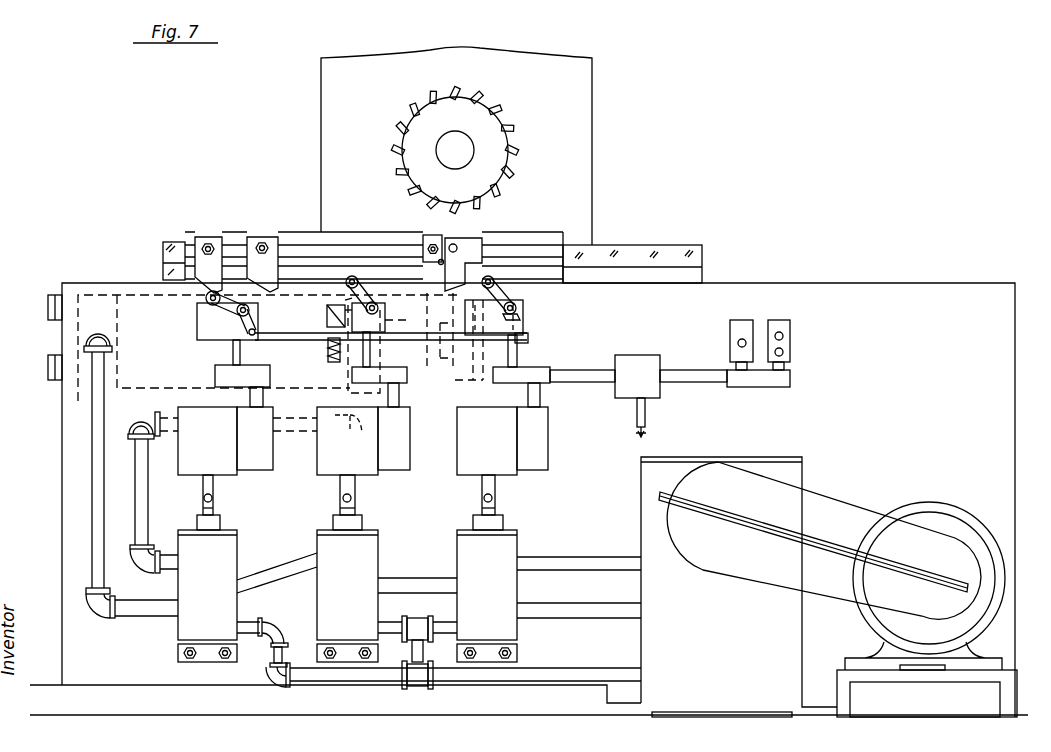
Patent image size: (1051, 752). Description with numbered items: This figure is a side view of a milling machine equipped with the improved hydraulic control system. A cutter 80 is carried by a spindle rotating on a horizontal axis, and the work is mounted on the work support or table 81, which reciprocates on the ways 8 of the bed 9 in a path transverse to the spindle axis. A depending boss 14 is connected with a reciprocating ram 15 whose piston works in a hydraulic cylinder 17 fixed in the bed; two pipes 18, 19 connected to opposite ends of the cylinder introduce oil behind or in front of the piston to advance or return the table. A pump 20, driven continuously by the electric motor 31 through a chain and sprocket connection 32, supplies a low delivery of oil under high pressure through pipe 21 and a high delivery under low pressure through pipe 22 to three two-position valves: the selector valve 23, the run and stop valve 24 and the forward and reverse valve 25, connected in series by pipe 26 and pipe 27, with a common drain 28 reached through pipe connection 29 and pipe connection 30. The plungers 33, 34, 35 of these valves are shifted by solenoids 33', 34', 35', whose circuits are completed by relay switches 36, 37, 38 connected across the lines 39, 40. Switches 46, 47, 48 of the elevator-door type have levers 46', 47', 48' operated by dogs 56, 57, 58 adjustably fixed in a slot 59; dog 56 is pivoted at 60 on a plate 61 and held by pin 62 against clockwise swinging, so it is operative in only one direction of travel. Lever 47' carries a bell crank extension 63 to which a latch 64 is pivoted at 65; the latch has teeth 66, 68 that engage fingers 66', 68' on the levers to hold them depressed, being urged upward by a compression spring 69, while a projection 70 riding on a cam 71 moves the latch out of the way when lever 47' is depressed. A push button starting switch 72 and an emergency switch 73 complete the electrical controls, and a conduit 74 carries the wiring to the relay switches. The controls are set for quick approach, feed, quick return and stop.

The ways 8 is at (644, 252).
The bed 9 is at (1013, 325).
The depending boss 14 is at (443, 327).
The reciprocating ram 15 is at (426, 372).
The hydraulic cylinder 17 is at (128, 294).
The pipe 18 is at (92, 420).
The pipe 19 is at (142, 478).
The pump 20 is at (641, 487).
The pipe 21 is at (573, 560).
The pipe 22 is at (563, 609).
The selector valve 23 is at (500, 553).
The run and stop valve 24 is at (367, 545).
The forward and reverse valve 25 is at (227, 545).
The pipe 26 is at (410, 582).
The pipe 27 is at (267, 576).
The common drain 28 is at (557, 673).
The pipe connection 29 is at (412, 653).
The pipe connection 30 is at (270, 655).
The electric motor 31 is at (948, 520).
The chain and sprocket connection 32 is at (825, 508).
The plunger 33 is at (508, 502).
The magnetic solenoid 33' is at (487, 441).
The plunger 34 is at (365, 502).
The magnetic solenoid 34' is at (347, 441).
The plunger 35 is at (228, 502).
The magnetic solenoid 35' is at (207, 441).
The relay switch 36 is at (521, 402).
The relay switch 37 is at (381, 418).
The relay switch 38 is at (244, 417).
The line 39 is at (637, 432).
The line 40 is at (647, 433).
The switch 46 is at (514, 321).
The lever 46' is at (522, 295).
The switch 47 is at (204, 323).
The lever 47' is at (227, 314).
The switch 48 is at (384, 316).
The lever 48' is at (385, 295).
The dog 56 is at (463, 264).
The dog 57 is at (208, 265).
The dog 58 is at (262, 264).
The slot 59 is at (534, 250).
The pivot 60 is at (455, 246).
The plate 61 is at (432, 237).
The pin 62 is at (439, 263).
The bell crank extension 63 is at (252, 320).
The latch 64 is at (268, 340).
The pivot 65 is at (232, 342).
The tooth 66 is at (539, 346).
The finger 66' is at (535, 315).
The tooth 68 is at (376, 349).
The finger 68' is at (326, 290).
The compression spring 69 is at (327, 348).
The projection 70 is at (327, 326).
The cam 71 is at (335, 322).
The push button starting switch 72 is at (746, 322).
The emergency switch 73 is at (787, 322).
The conduit 74 is at (577, 372).
The cutter 80 is at (490, 142).
The work support or table 81 is at (356, 236).